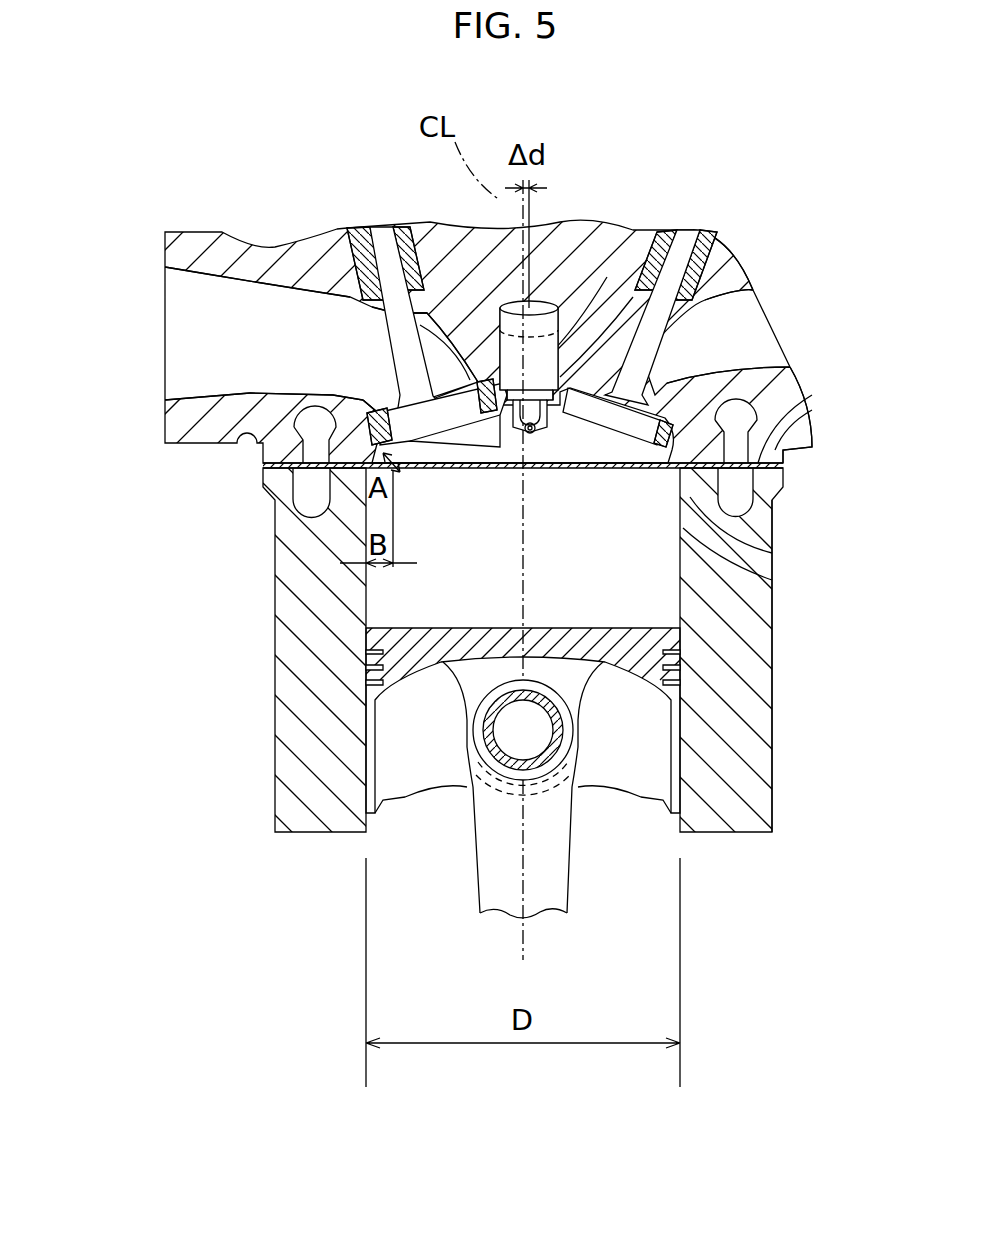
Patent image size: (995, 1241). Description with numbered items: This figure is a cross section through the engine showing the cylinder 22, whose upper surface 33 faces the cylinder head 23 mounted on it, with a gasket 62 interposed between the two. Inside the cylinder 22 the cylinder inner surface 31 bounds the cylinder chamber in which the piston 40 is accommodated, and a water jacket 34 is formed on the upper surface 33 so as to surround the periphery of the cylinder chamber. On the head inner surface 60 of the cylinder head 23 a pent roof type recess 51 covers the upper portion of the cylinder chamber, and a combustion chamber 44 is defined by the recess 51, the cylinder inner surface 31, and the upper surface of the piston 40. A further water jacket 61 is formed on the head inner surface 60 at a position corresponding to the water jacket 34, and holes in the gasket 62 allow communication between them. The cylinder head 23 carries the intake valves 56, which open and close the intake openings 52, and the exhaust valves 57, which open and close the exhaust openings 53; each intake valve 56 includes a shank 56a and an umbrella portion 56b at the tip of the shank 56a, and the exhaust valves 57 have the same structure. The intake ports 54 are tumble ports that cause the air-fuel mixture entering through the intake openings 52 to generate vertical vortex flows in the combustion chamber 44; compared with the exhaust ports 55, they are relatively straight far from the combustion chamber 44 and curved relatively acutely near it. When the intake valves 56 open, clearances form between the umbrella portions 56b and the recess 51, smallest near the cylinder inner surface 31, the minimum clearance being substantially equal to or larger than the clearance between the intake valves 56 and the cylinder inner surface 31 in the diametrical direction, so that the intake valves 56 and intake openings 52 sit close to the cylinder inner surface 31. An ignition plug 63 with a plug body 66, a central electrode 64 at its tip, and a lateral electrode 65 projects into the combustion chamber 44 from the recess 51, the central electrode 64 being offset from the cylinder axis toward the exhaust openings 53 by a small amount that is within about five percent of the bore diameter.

The cylinder 22 is at (273, 680).
The cylinder head 23 is at (195, 438).
The cylinder inner surface 31 is at (676, 563).
The upper surface of the cylinder 33 is at (800, 433).
The water jacket 34 is at (305, 495).
The piston 40 is at (568, 630).
The combustion chamber 44 is at (437, 570).
The pent roof type recess 51 is at (763, 566).
The intake openings 52 is at (463, 410).
The exhaust openings 53 is at (640, 440).
The intake ports 54 is at (195, 327).
The exhaust ports 55 is at (745, 335).
The intake valves 56 is at (286, 318).
The shank 56a is at (403, 357).
The umbrella portion 56b is at (400, 397).
The exhaust valves 57 is at (760, 285).
The head inner surface 60 is at (747, 540).
The water jacket 61 is at (300, 432).
The gasket 62 is at (787, 463).
The ignition plug 63 is at (620, 250).
The central electrode 64 is at (523, 432).
The lateral electrode 65 is at (540, 435).
The plug body 66 is at (583, 250).